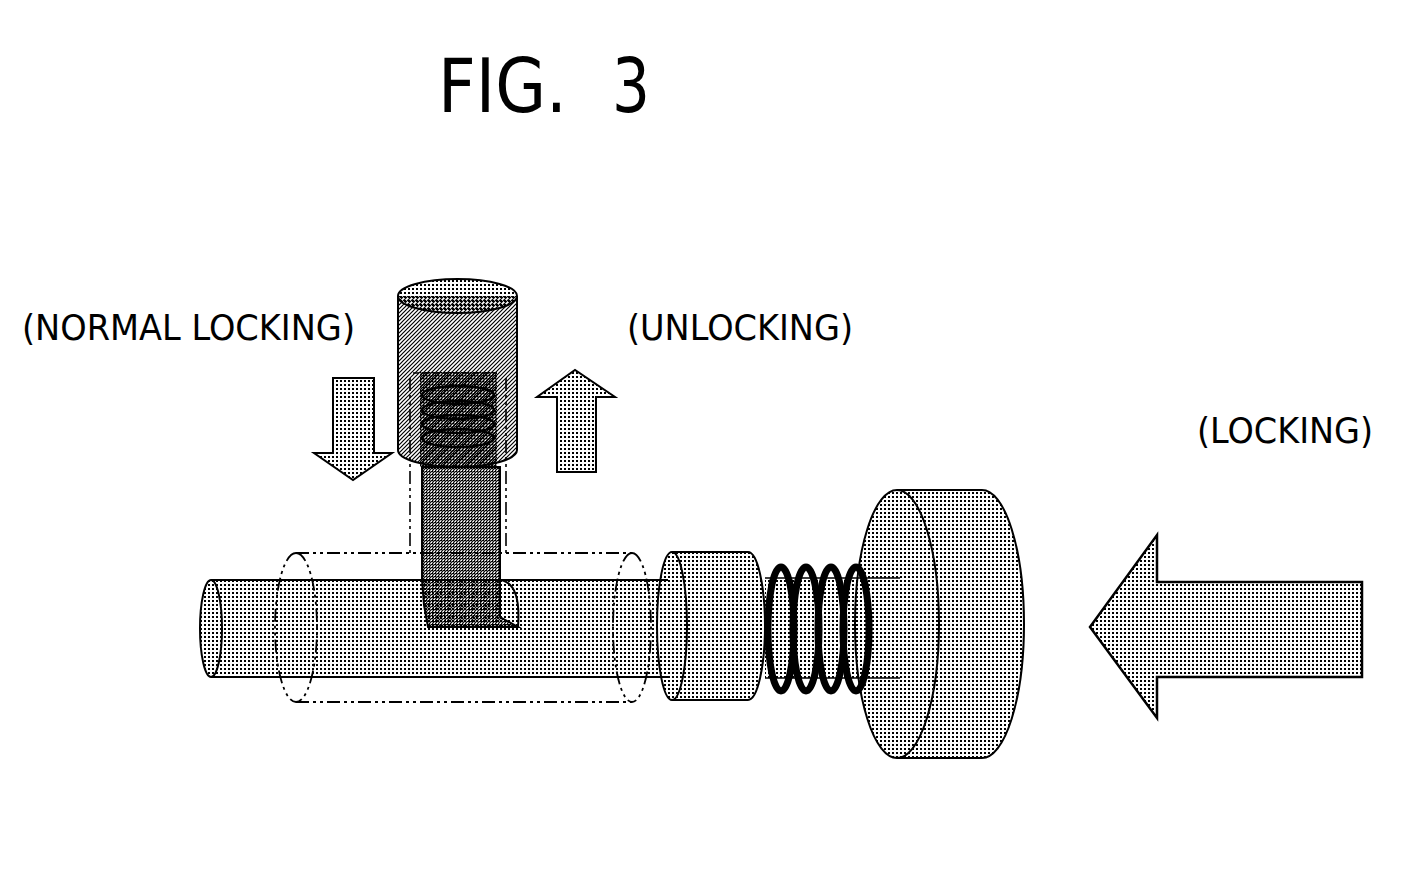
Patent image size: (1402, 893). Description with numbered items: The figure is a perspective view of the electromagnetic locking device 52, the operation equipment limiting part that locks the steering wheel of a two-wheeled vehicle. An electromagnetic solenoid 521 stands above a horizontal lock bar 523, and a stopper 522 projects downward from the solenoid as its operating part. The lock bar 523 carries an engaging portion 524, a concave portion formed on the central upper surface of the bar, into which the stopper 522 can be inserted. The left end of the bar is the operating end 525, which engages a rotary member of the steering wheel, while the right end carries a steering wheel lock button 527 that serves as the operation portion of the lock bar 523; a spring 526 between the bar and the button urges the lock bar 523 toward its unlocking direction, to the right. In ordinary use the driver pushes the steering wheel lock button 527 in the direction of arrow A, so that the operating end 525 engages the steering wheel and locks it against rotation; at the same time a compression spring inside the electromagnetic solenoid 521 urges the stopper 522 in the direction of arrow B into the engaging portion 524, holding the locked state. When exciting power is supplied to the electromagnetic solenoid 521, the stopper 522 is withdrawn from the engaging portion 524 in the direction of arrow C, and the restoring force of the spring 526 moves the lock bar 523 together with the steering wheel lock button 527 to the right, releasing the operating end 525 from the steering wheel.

The electromagnetic locking device 52 is at (800, 423).
The electromagnetic solenoid 521 is at (513, 345).
The stopper 522 is at (470, 518).
The lock bar 523 is at (410, 673).
The engaging portion 524 is at (453, 627).
The operating end 525 is at (213, 638).
The spring 526 is at (832, 690).
The steering wheel lock button 527 is at (927, 507).
The arrow A is at (1228, 583).
The arrow B is at (333, 420).
The arrow C is at (597, 418).